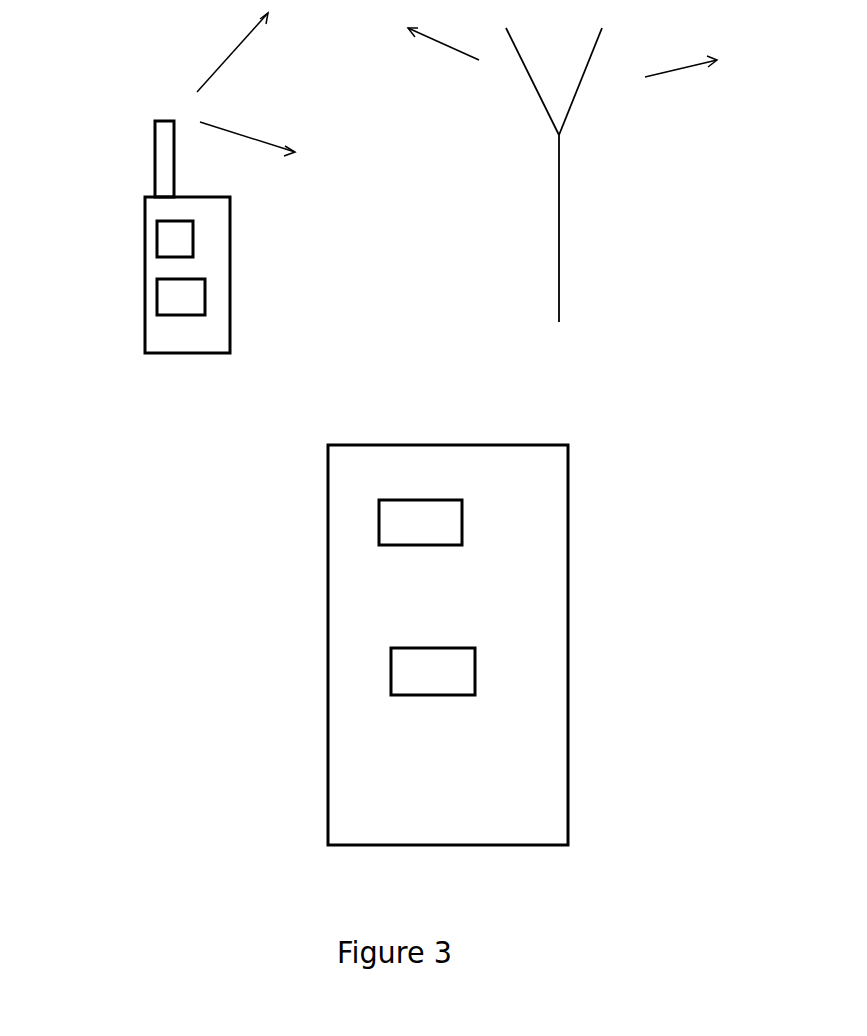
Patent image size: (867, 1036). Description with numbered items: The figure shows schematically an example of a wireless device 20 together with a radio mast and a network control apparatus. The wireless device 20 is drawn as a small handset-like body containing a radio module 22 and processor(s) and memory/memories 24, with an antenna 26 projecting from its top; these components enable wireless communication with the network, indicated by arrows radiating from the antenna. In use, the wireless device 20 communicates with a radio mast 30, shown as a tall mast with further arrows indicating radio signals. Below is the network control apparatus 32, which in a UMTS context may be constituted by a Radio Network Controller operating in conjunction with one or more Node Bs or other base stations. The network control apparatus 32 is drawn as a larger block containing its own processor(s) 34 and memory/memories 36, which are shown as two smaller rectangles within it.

The wireless device 20 is at (145, 248).
The radio module 22 is at (195, 228).
The processor(s) and memory/memories 24 is at (157, 298).
The antenna 26 is at (157, 143).
The radio mast 30 is at (559, 180).
The network control apparatus 32 is at (568, 675).
The processor(s) 34 is at (378, 528).
The memory/memories 36 is at (390, 668).